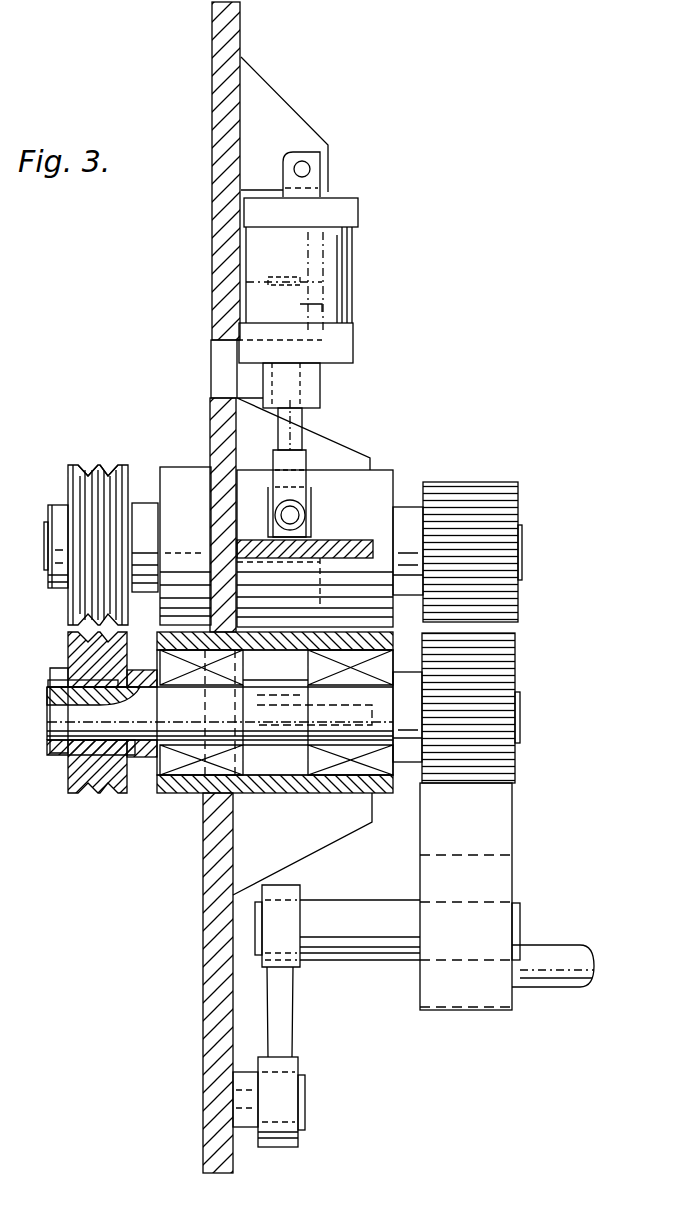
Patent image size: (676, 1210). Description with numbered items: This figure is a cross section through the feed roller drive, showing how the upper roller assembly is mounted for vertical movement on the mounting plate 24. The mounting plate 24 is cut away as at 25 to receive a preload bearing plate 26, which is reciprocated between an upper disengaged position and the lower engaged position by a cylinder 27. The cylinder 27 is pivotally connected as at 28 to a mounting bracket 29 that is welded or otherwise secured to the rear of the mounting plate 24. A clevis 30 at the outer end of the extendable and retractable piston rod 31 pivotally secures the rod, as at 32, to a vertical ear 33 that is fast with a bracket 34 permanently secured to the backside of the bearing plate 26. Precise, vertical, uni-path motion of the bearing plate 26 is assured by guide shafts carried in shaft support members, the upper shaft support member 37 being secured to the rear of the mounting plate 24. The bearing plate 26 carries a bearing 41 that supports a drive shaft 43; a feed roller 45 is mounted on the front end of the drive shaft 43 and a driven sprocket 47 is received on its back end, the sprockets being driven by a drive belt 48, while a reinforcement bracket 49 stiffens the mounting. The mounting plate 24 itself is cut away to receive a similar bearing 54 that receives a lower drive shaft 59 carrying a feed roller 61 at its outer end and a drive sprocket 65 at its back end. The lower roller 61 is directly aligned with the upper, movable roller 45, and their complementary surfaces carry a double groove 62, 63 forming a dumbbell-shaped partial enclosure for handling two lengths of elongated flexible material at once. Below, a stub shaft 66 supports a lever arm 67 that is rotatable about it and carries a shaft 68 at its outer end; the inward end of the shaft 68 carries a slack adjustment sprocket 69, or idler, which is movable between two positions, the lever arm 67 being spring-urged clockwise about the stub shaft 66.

The mounting plate 24 is at (217, 44).
The cut-away 25 is at (236, 346).
The preload bearing plate 26 is at (218, 410).
The cylinder 27 is at (350, 286).
The pivotal connection 28 is at (306, 171).
The mounting bracket 29 is at (293, 115).
The clevis 30 is at (300, 456).
The piston rod 31 is at (300, 430).
The pivot 32 is at (296, 510).
The vertical ear 33 is at (302, 533).
The bracket 34 is at (374, 548).
The upper shaft support member 37 is at (322, 311).
The bearing 41 is at (393, 473).
The drive shaft 43 is at (48, 548).
The feed roller 45 is at (70, 470).
The driven sprocket 47 is at (506, 606).
The drive belt 48 is at (500, 483).
The reinforcement bracket 49 is at (372, 458).
The bearing 54 is at (190, 796).
The drive shaft 59 is at (48, 730).
The feed roller 61 is at (80, 796).
The groove 62 is at (90, 466).
The groove 63 is at (111, 466).
The drive sprocket 65 is at (512, 768).
The stub shaft 66 is at (306, 1106).
The lever arm 67 is at (294, 1026).
The shaft 68 is at (372, 946).
The slack adjustment sprocket 69 is at (505, 856).